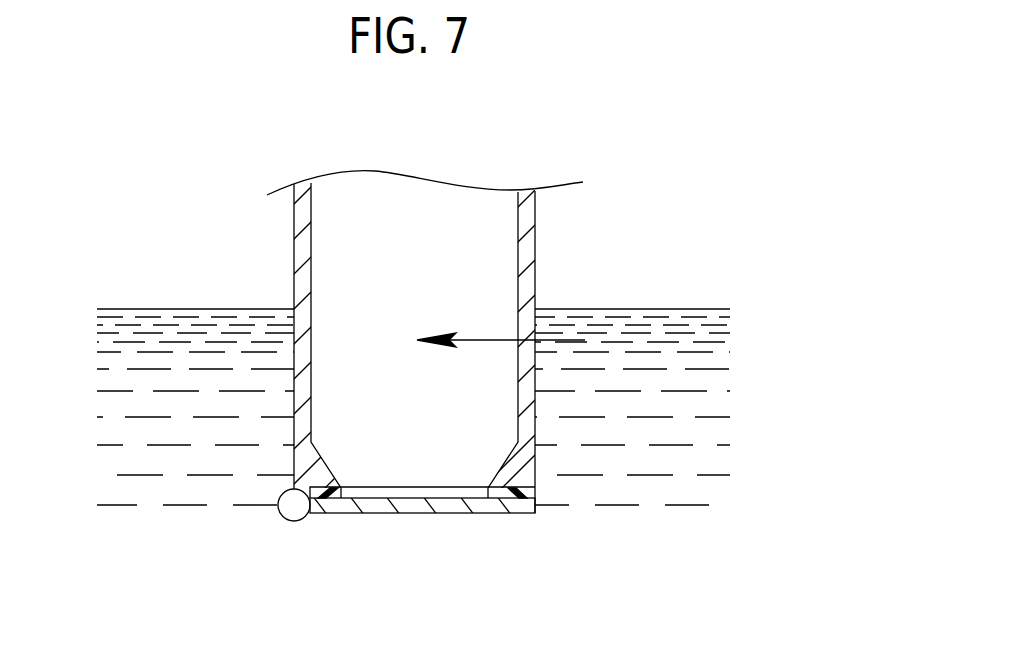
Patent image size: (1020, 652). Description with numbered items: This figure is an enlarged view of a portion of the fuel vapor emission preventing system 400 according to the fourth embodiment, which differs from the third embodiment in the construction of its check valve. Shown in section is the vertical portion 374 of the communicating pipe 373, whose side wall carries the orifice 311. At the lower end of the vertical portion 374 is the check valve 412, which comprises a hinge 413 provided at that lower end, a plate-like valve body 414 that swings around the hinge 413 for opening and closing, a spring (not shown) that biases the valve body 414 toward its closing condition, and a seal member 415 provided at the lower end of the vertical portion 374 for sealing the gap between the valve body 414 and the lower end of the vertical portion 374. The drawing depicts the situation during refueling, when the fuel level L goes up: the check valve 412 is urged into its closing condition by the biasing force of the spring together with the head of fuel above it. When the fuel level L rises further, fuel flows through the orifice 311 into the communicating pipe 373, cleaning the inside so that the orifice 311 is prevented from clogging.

The fuel vapor emission preventing system 400 is at (134, 206).
The communicating pipe 373 is at (417, 204).
The vertical portion 374 is at (527, 201).
The orifice 311 is at (528, 325).
The check valve 412 is at (523, 528).
The hinge 413 is at (288, 510).
The valve body 414 is at (417, 506).
The seal member 415 is at (518, 493).
The fuel level L is at (206, 308).